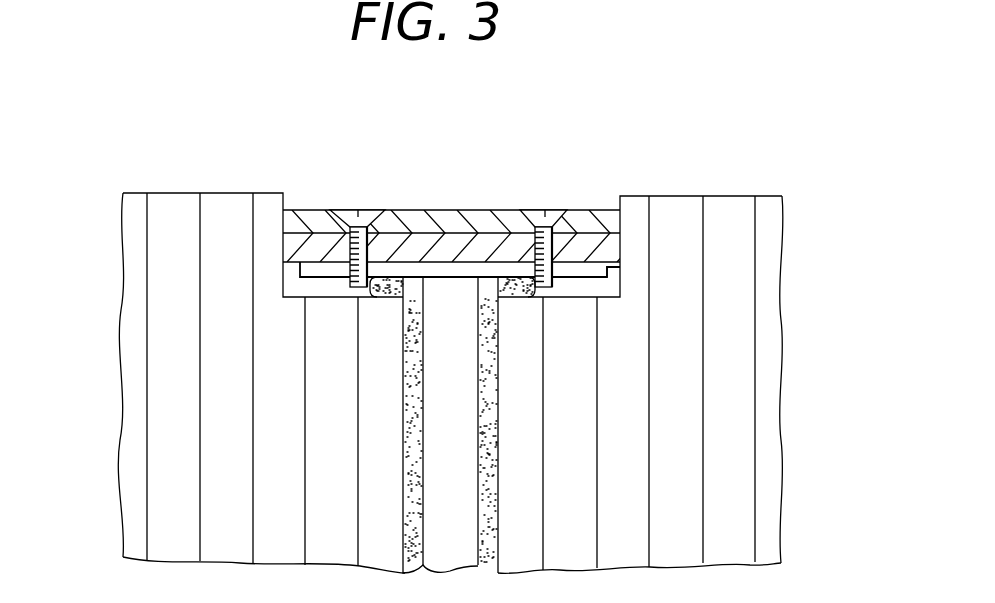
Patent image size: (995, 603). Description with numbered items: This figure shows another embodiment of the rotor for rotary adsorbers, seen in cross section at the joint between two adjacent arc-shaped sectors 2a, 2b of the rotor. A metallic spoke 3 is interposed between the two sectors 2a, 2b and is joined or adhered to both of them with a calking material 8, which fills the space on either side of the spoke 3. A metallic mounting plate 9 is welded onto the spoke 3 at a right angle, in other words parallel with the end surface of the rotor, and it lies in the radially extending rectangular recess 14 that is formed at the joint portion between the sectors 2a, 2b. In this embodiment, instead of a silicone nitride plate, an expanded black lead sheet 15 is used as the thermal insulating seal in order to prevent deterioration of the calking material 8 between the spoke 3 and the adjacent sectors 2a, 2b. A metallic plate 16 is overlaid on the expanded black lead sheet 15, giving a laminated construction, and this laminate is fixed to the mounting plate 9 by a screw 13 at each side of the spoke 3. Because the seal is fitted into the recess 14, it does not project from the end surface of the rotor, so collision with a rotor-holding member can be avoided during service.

The sector 2a is at (162, 296).
The sector 2b is at (767, 355).
The spoke 3 is at (462, 468).
The calking material 8 is at (378, 300).
The mounting plate 9 is at (588, 277).
The screw 13 is at (369, 210).
The rectangular recess 14 is at (613, 285).
The expanded black lead sheet 15 is at (488, 218).
The metallic plate 16 is at (463, 193).